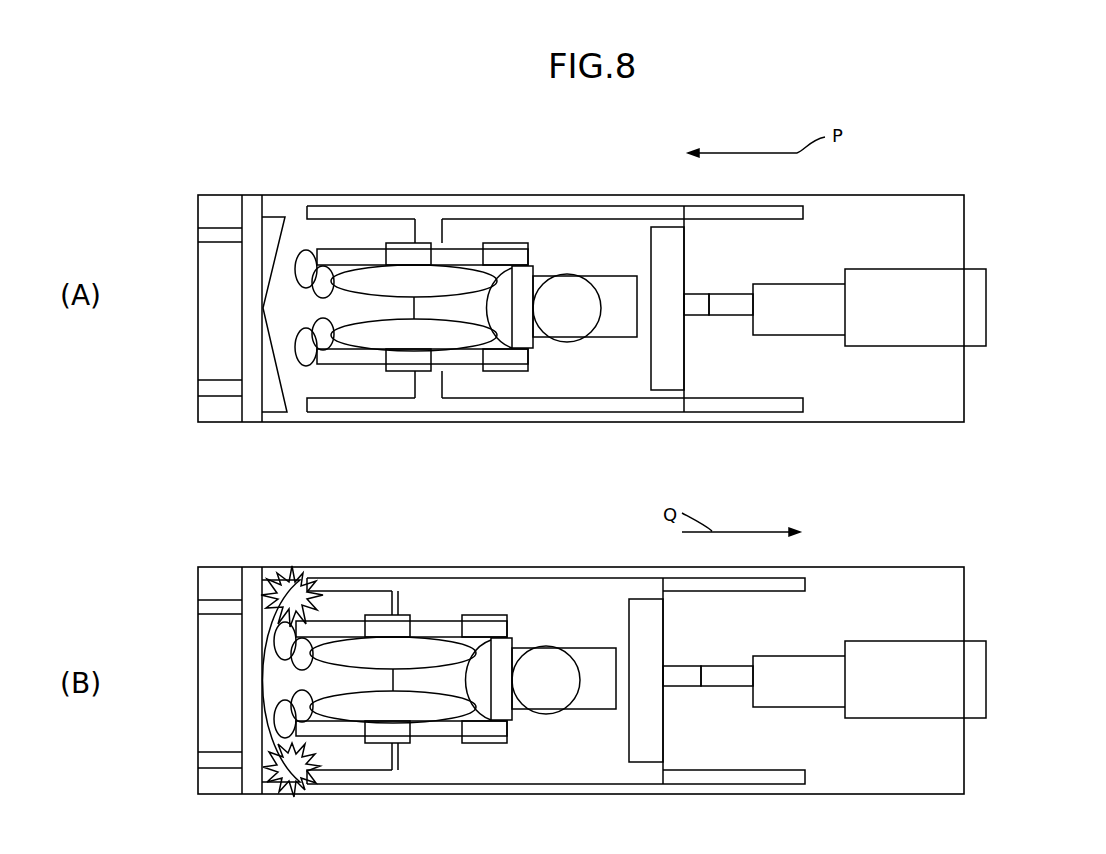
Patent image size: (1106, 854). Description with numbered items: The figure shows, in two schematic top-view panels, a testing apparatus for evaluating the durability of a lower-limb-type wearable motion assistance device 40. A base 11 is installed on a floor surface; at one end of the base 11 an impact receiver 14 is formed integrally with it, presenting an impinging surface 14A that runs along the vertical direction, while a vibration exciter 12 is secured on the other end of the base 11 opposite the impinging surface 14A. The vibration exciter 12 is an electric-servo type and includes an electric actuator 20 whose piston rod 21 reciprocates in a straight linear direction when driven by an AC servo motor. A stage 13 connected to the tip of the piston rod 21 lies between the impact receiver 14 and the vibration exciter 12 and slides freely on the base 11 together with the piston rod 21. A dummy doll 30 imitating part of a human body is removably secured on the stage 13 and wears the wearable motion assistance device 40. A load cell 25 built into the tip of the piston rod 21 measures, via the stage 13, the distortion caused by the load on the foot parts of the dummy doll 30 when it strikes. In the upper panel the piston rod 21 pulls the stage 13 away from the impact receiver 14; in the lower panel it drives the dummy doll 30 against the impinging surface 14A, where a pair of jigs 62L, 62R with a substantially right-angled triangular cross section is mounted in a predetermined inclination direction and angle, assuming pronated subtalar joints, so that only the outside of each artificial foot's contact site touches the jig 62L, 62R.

The base 11 is at (965, 225).
The vibration exciter 12 is at (888, 252).
The stage 13 is at (553, 205).
The impact receiver 14 is at (252, 423).
The impinging surface 14A is at (264, 207).
The electric actuator 20 is at (987, 305).
The piston rod 21 is at (732, 293).
The load cell 25 is at (693, 293).
The dummy doll 30 is at (445, 276).
The wearable motion assistance device 40 is at (455, 367).
The jig 62L is at (268, 250).
The jig 62R is at (270, 375).